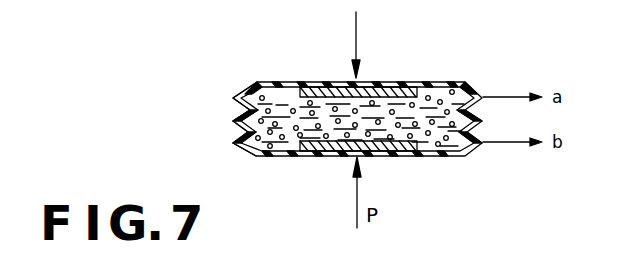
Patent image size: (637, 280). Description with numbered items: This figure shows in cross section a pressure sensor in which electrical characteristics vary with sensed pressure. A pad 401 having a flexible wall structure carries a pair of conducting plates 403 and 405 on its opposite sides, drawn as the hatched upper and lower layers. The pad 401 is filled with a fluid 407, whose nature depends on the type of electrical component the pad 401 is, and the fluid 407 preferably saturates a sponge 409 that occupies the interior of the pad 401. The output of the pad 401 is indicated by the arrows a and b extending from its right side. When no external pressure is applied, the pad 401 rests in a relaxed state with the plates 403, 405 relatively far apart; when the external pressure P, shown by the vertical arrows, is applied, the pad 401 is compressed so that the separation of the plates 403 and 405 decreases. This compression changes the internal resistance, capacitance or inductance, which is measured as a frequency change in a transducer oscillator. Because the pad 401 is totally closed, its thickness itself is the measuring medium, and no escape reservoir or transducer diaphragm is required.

The pad 401 is at (262, 67).
The conducting plate 403 is at (397, 93).
The conducting plate 405 is at (392, 143).
The fluid 407 is at (242, 113).
The sponge 409 is at (311, 121).